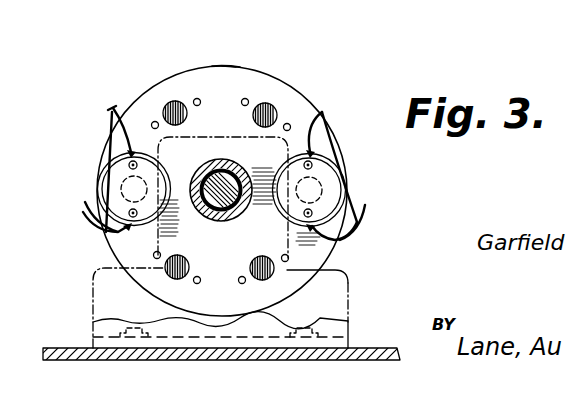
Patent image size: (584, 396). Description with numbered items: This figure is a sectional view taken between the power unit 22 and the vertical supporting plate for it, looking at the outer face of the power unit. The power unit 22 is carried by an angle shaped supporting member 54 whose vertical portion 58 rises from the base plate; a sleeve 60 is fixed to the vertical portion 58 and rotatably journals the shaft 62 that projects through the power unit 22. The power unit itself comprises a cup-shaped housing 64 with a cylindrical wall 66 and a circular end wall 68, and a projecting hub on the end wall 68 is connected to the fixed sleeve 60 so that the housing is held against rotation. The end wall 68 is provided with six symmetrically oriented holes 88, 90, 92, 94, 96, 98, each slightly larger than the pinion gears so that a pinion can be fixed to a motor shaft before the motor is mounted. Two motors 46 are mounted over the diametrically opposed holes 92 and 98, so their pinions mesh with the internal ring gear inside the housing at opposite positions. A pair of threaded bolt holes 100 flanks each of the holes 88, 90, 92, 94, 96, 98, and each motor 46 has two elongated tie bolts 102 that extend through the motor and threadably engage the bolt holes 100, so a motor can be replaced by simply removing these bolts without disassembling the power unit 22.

The power unit 22 is at (318, 104).
The motors 46 is at (128, 162).
The angle shaped supporting member 54 is at (354, 290).
The vertical portion 58 is at (199, 134).
The sleeve 60 is at (193, 222).
The shaft 62 is at (203, 167).
The cup-shaped housing 64 is at (180, 66).
The cylindrical wall 66 is at (208, 67).
The circular end wall 68 is at (228, 78).
The hole 88 is at (167, 101).
The hole 90 is at (255, 127).
The hole 92 is at (318, 186).
The hole 94 is at (272, 282).
The hole 96 is at (190, 266).
The hole 98 is at (125, 188).
The threaded bolt holes 100 is at (247, 101).
The tie bolts 102 is at (122, 153).